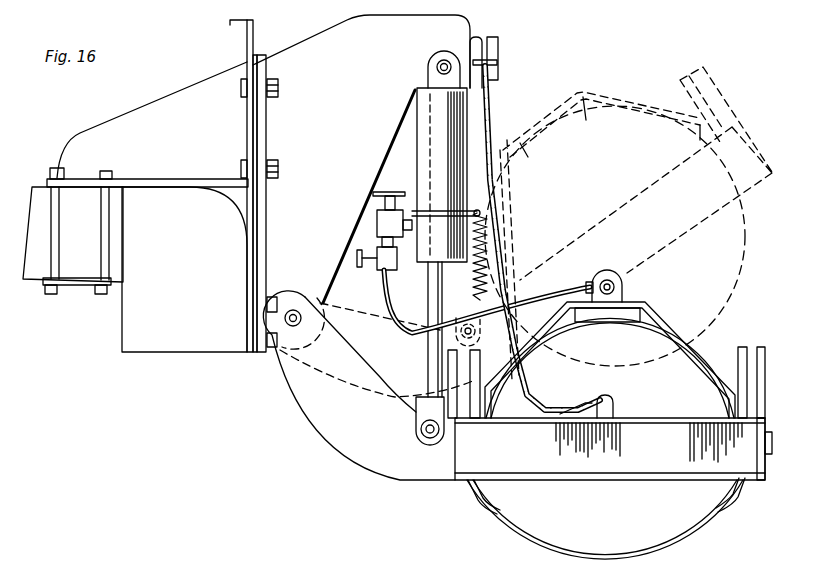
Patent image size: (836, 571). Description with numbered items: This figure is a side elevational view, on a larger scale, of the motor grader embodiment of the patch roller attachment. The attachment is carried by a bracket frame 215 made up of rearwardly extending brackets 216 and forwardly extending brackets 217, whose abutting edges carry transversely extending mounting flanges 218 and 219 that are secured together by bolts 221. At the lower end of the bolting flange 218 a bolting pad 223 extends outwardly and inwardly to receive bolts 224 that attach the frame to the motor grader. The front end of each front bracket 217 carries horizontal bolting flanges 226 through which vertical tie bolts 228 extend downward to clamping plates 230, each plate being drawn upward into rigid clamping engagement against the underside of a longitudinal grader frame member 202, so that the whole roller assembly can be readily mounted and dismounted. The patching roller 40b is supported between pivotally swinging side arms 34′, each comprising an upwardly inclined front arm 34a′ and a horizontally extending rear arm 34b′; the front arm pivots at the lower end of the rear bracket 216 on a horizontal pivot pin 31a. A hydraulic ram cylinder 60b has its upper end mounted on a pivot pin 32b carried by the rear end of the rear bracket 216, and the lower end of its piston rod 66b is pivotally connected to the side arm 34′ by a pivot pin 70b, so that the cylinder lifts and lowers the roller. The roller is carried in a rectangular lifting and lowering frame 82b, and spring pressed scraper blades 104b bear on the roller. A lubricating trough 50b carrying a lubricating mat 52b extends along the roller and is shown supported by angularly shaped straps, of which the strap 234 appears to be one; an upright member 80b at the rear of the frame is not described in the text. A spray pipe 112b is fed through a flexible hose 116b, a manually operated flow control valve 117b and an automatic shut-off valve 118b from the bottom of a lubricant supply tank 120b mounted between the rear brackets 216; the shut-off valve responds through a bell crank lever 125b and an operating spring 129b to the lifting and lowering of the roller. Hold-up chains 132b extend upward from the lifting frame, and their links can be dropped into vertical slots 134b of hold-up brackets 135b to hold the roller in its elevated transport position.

The bracket frame 215 is at (245, 60).
The rearwardly extending bracket 216 is at (332, 65).
The forwardly extending bracket 217 is at (170, 135).
The bolting flange 218 is at (267, 120).
The mounting flange 219 is at (256, 118).
The bolts 221 is at (279, 90).
The longitudinal grader frame member 202 is at (42, 177).
The horizontal bolting flange 226 is at (89, 179).
The vertical tie bolts 228 is at (100, 212).
The clamping plate 230 is at (78, 285).
The bolting pad 223 is at (250, 352).
The bolts 224 is at (276, 350).
The horizontal pivot pin 31a is at (293, 312).
The pivot pin 32b is at (438, 66).
The hydraulic ram cylinder 60b is at (442, 125).
The lubricant supply tank 120b is at (393, 172).
The automatic shut-off valve 118b is at (377, 225).
The manually operated flow control valve 117b is at (387, 255).
The flexible hose 116b is at (402, 320).
The hydraulic piston rod 66b is at (428, 356).
The pivot pin 70b is at (420, 430).
The upwardly inclined front arm 34a′ is at (347, 410).
The pivotally swinging side arm 34′ is at (362, 465).
The horizontally extending rear arm 34b′ is at (537, 458).
The spring pressed scraper blade 104b is at (492, 516).
The patching roller 40b is at (526, 542).
The vertical slot 134b is at (492, 37).
The hold-up bracket 135b is at (498, 62).
The hold-up chain 132b is at (494, 136).
The bell crank lever 125b is at (505, 192).
The operating spring 129b is at (490, 240).
The spray pipe 112b is at (607, 280).
The lubricating trough 50b is at (641, 302).
The arch member 234 is at (675, 330).
The lubricating mat 52b is at (627, 322).
The upright post 80b is at (735, 347).
The rectangular lifting and lowering frame 82b is at (753, 478).